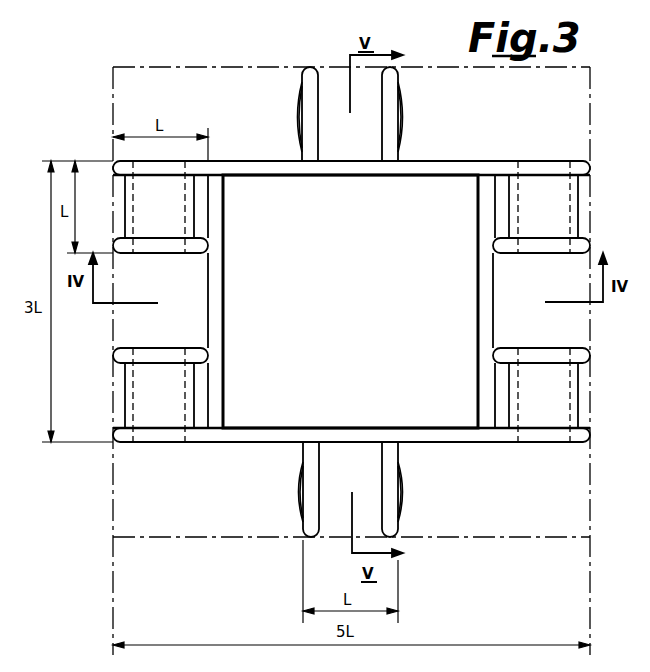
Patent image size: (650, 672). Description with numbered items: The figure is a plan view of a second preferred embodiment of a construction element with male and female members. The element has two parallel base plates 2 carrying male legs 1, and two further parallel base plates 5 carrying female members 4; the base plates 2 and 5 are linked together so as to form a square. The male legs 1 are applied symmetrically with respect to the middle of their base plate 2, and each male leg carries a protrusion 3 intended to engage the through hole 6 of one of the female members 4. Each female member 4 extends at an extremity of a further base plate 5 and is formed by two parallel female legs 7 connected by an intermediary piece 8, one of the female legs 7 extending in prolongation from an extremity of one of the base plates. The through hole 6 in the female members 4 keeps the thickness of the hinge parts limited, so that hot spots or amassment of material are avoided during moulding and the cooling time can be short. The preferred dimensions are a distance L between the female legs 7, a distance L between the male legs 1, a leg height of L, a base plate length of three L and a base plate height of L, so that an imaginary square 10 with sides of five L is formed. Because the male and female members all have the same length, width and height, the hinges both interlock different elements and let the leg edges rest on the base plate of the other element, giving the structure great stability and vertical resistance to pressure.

The male legs 1 is at (310, 82).
The base plates 2 is at (450, 170).
The protrusions 3 is at (297, 120).
The female members 4 is at (582, 386).
The further base plates 5 is at (215, 325).
The through hole 6 is at (535, 437).
The female legs 7 is at (590, 168).
The intermediary piece 8 is at (573, 203).
The imaginary square 10 is at (166, 66).